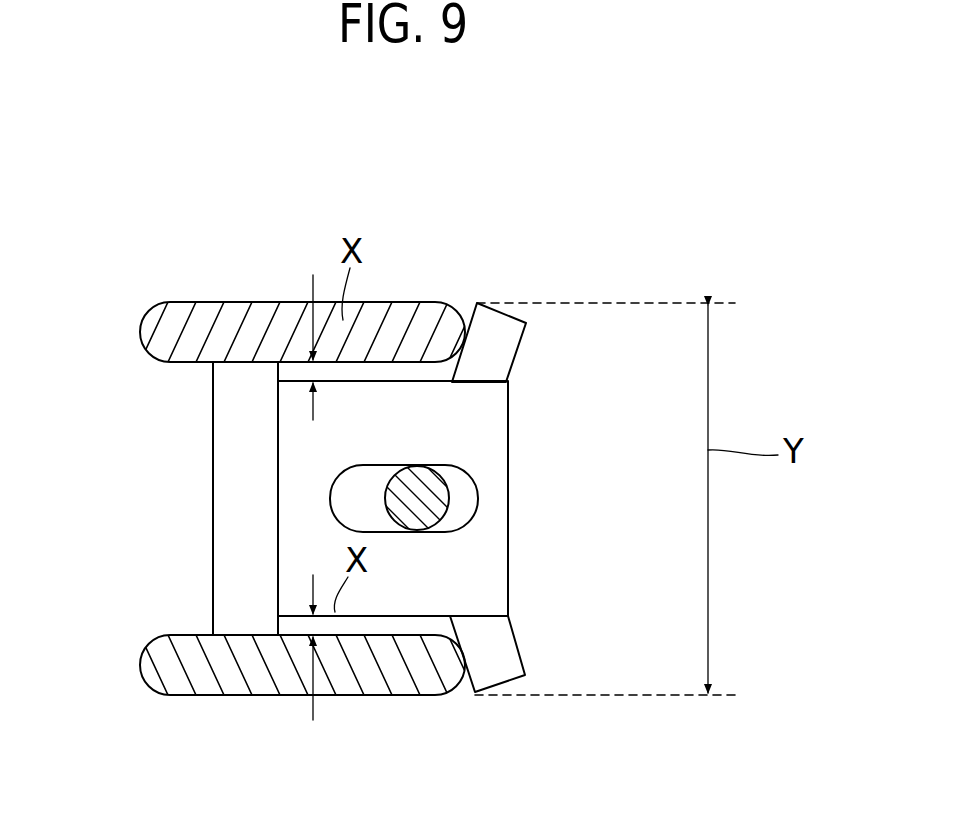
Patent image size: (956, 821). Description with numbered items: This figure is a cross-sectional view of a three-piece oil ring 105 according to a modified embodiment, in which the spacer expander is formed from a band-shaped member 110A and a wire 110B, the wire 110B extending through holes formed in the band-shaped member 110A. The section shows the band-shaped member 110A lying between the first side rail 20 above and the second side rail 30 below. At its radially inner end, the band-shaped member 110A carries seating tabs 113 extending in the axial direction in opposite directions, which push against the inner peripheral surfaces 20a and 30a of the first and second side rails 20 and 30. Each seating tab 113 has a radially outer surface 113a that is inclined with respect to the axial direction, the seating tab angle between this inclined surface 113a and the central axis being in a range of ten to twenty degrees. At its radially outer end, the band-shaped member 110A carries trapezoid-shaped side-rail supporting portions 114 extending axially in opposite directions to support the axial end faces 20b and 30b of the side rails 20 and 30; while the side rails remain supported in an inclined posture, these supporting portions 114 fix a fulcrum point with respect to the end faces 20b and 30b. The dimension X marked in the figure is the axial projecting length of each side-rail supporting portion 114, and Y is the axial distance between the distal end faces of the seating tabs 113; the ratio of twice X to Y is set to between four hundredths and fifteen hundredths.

The first side rail 20 is at (279, 318).
The inner peripheral surface of the first side rail 20a is at (460, 307).
The axial end face of the first side rail 20b is at (200, 363).
The second side rail 30 is at (280, 680).
The inner peripheral surface of the second side rail 30a is at (455, 690).
The axial end face of the second side rail 30b is at (190, 635).
The connector 105 is at (702, 272).
The band-shaped member 110A is at (490, 415).
The wire 110B is at (447, 510).
The seating tab 113 is at (503, 347).
The radially outer surface 113a is at (472, 302).
The side-rail supporting portion 114 is at (250, 375).